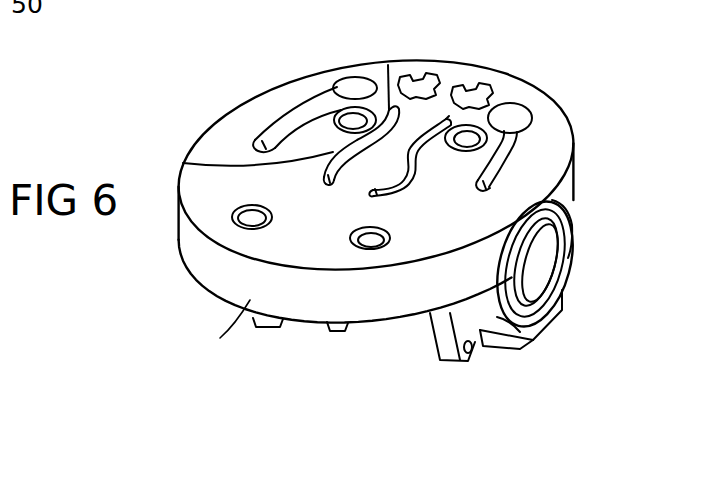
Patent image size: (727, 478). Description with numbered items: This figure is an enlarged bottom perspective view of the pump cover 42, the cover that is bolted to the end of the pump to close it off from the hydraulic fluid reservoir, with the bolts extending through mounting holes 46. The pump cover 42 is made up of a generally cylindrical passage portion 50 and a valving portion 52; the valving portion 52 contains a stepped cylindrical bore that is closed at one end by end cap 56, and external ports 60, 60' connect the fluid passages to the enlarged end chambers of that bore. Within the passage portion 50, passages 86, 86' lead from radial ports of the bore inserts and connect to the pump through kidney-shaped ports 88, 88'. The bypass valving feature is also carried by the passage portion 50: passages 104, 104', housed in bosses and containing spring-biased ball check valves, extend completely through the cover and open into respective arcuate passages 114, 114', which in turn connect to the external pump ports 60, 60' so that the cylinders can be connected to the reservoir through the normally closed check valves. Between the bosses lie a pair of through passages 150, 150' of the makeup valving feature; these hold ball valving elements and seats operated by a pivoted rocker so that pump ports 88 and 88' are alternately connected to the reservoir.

The pump cover 42 is at (165, 252).
The mounting holes 46 is at (243, 210).
The passage portion 50 is at (215, 329).
The valving portion 52 is at (497, 317).
The end cap 56 is at (533, 286).
The external port 60 is at (548, 169).
The external port 60' is at (210, 128).
The passage 86 is at (354, 246).
The passage 86' is at (270, 212).
The kidney-shaped port 88 is at (457, 73).
The kidney-shaped port 88' is at (353, 78).
The passage 104 is at (532, 88).
The passage 104' is at (312, 69).
The arcuate passage 114 is at (551, 138).
The arcuate passage 114' is at (268, 107).
The through passage 150 is at (491, 61).
The through passage 150' is at (407, 49).